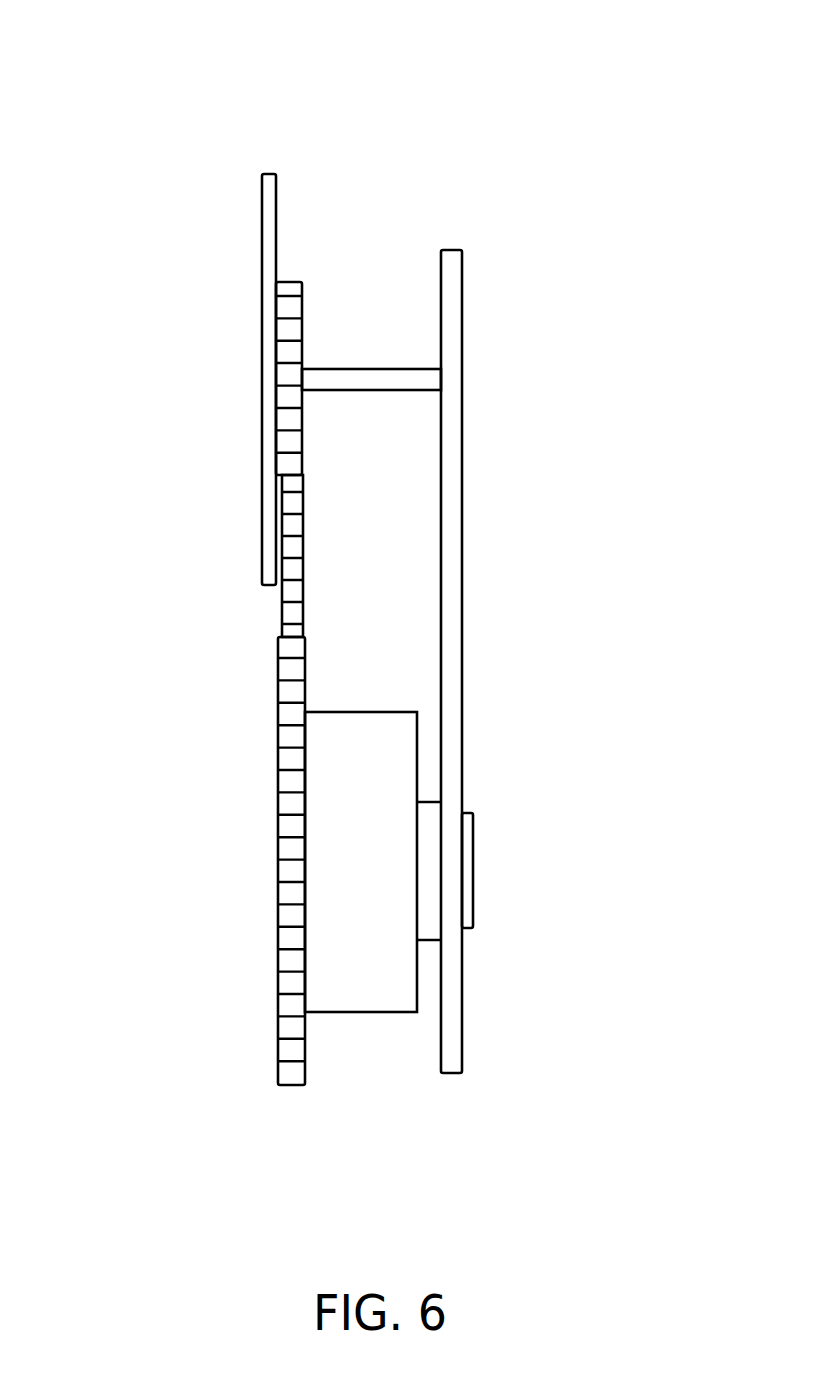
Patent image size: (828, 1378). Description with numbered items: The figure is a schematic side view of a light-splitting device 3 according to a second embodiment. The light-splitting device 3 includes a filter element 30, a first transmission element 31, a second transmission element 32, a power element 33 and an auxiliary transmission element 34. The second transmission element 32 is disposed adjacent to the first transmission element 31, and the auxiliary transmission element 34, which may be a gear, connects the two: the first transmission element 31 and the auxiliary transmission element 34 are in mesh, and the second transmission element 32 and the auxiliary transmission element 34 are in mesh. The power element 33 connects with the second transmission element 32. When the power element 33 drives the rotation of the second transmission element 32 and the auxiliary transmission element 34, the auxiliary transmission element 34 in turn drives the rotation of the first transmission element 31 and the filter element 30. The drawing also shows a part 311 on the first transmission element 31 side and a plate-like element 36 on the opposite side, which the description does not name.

The light-splitting device 3 is at (160, 27).
The filter element 30 is at (268, 572).
The first transmission element 31 is at (291, 281).
The connecting bar 311 is at (382, 369).
The second transmission element 32 is at (296, 1082).
The power element 33 is at (353, 1000).
The auxiliary transmission element 34 is at (293, 618).
The back plate 36 is at (463, 1045).